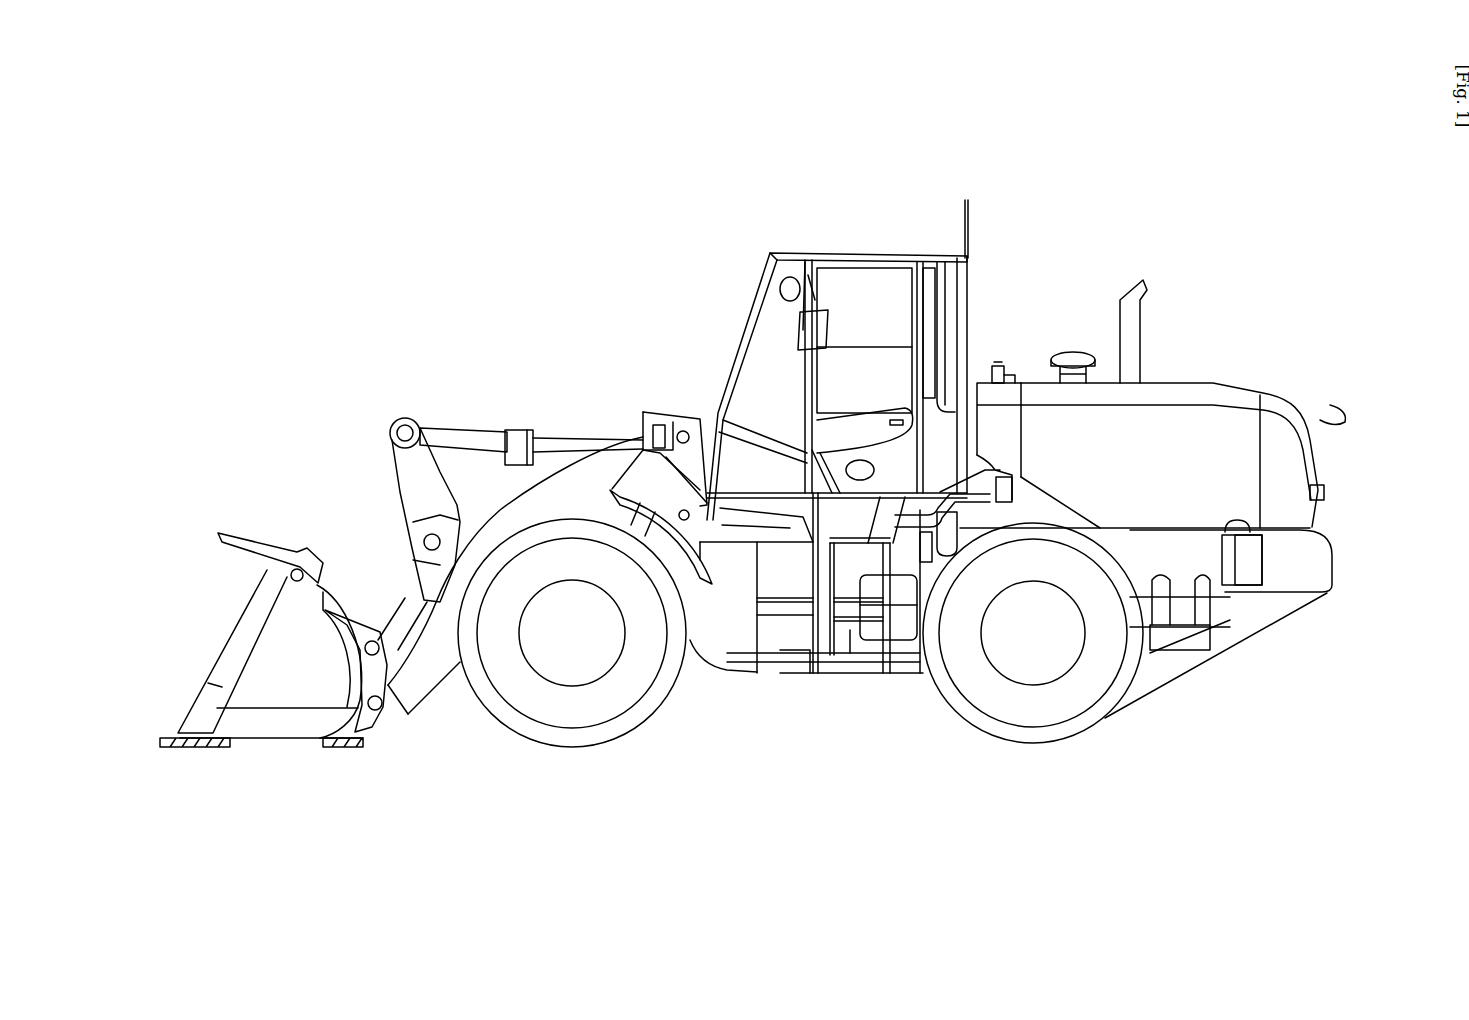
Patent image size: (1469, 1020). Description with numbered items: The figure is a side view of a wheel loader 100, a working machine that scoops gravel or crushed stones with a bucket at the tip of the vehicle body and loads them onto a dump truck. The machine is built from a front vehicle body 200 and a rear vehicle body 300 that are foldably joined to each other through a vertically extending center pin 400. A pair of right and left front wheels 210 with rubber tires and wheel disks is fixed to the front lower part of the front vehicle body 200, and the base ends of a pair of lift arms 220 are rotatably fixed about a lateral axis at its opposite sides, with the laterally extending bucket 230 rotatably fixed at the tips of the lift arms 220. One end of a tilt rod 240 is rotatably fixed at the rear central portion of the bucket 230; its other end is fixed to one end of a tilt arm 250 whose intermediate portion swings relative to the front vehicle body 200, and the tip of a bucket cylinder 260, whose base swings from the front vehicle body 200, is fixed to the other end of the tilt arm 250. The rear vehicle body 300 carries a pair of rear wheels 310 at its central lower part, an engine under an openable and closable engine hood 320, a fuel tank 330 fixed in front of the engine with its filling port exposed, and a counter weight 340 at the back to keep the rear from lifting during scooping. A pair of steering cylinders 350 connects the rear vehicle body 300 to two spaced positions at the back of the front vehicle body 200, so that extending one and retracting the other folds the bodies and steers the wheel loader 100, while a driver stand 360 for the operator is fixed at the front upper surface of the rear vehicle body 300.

The wheel loader 100 is at (710, 341).
The front vehicle body 200 is at (608, 426).
The front wheels 210 is at (636, 725).
The lift arms 220 is at (432, 690).
The bucket 230 is at (222, 650).
The tilt rod 240 is at (393, 627).
The tilt arm 250 is at (400, 465).
The bucket cylinder 260 is at (473, 430).
The rear vehicle body 300 is at (1302, 381).
The rear wheels 310 is at (972, 720).
The engine hood 320 is at (1238, 457).
The fuel tank 330 is at (990, 400).
The counter weight 340 is at (1332, 570).
The steering cylinders 350 is at (865, 622).
The driver stand 360 is at (854, 253).
The center pin 400 is at (793, 522).